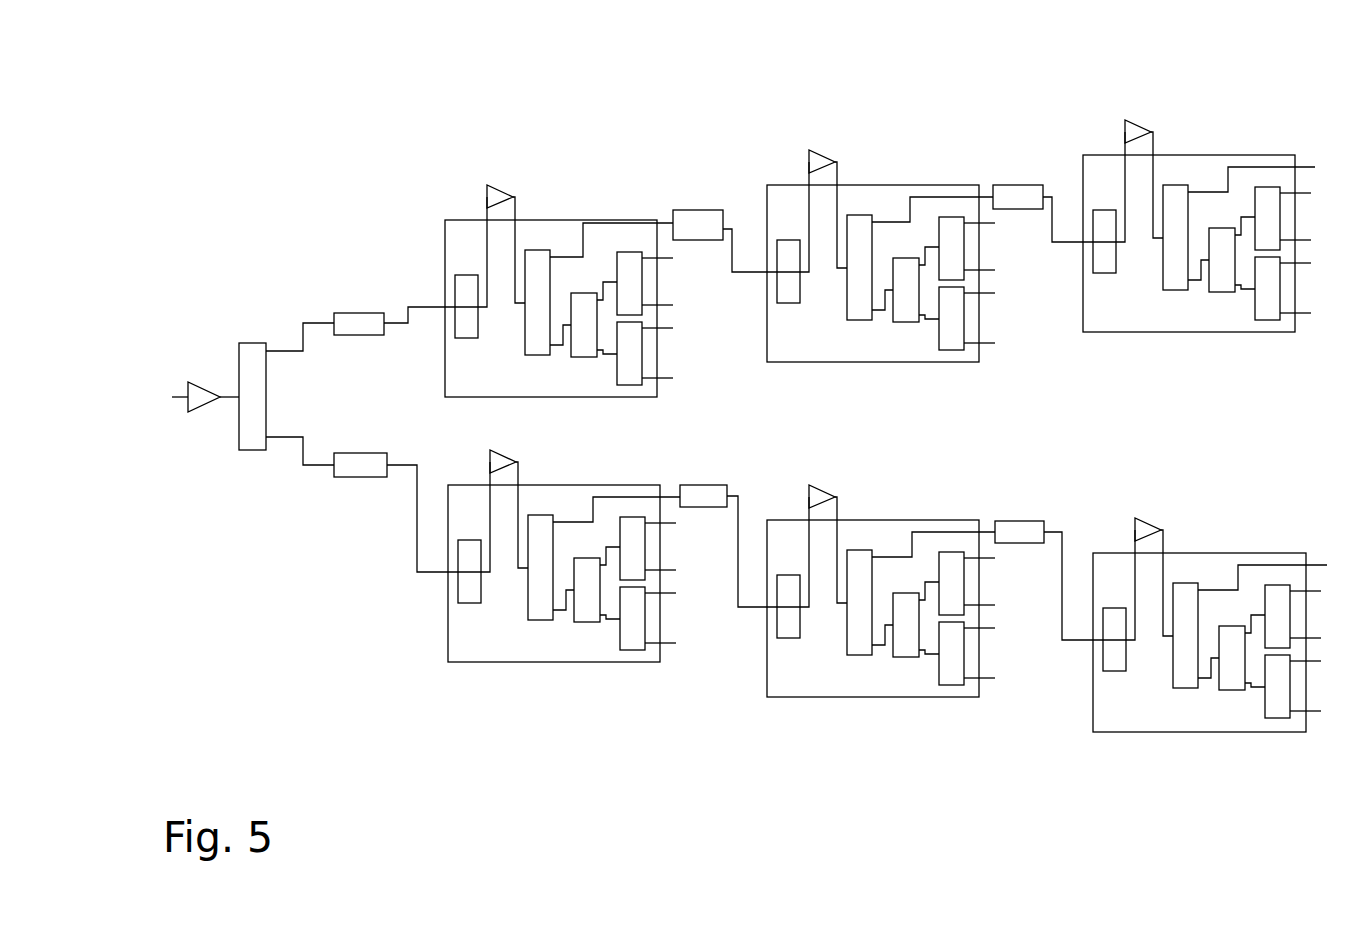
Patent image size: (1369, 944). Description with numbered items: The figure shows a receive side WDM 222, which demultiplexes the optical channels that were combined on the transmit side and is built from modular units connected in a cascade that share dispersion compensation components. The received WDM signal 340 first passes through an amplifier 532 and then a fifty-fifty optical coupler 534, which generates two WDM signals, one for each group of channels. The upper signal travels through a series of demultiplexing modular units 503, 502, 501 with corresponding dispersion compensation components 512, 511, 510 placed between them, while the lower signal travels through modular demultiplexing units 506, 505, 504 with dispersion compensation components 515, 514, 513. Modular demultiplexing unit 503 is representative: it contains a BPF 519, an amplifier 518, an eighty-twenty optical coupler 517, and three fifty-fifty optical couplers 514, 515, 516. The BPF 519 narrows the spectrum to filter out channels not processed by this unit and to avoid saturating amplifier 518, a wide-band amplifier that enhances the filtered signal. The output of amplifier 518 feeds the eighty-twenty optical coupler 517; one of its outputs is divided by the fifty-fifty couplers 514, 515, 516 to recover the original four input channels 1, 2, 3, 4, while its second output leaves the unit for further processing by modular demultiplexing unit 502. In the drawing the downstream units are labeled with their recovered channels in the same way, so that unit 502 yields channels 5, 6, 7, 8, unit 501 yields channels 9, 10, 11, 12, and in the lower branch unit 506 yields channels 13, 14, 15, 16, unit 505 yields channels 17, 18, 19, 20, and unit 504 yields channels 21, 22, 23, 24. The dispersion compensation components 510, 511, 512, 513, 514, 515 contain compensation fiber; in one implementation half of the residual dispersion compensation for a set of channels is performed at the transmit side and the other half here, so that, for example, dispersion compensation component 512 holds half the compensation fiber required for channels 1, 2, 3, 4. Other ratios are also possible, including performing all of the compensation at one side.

The receive side WDM 222 is at (237, 70).
The received WDM signal 340 is at (145, 399).
The amplifier 532 is at (200, 382).
The 50/50 optical coupler 534 is at (255, 343).
The dispersion compensation component 512 is at (356, 313).
The dispersion compensation component 515 is at (361, 453).
The modular demultiplexing unit 503 is at (585, 383).
The amplifier 518 is at (505, 179).
The BPF 519 is at (456, 277).
The 80/20 optical coupler 517 is at (540, 250).
The 50/50 optical coupler 516 is at (581, 293).
The 50/50 optical coupler 514 is at (622, 252).
The dispersion compensation component 511 is at (711, 208).
The modular demultiplexing unit 502 is at (888, 256).
The dispersion compensation component 510 is at (1029, 184).
The modular demultiplexing unit 501 is at (1209, 226).
The modular demultiplexing unit 506 is at (574, 556).
The modular demultiplexing unit 505 is at (893, 591).
The dispersion compensation component 513 is at (1028, 520).
The modular demultiplexing unit 504 is at (1219, 625).
The input channel 1 is at (664, 257).
The input channel 2 is at (664, 304).
The input channel 3 is at (664, 327).
The input channel 4 is at (664, 377).
The output port 5 is at (986, 222).
The output port 6 is at (986, 269).
The output port 7 is at (986, 292).
The output port 8 is at (986, 342).
The output port 9 is at (1302, 192).
The output port 10 is at (1307, 239).
The output port 11 is at (1307, 262).
The output port 12 is at (1307, 312).
The output port 13 is at (672, 522).
The output port 14 is at (672, 569).
The output port 15 is at (672, 592).
The output port 16 is at (672, 642).
The output port 17 is at (991, 557).
The output port 18 is at (991, 604).
The output port 19 is at (991, 627).
The output port 20 is at (991, 677).
The output port 21 is at (1317, 590).
The output port 22 is at (1317, 637).
The output port 23 is at (1317, 660).
The output port 24 is at (1317, 710).